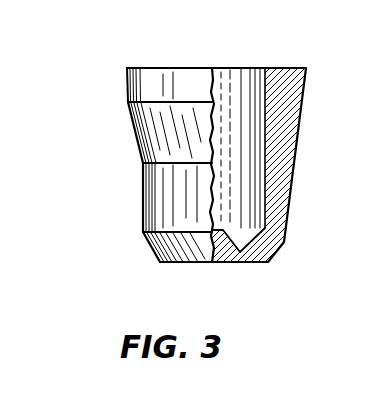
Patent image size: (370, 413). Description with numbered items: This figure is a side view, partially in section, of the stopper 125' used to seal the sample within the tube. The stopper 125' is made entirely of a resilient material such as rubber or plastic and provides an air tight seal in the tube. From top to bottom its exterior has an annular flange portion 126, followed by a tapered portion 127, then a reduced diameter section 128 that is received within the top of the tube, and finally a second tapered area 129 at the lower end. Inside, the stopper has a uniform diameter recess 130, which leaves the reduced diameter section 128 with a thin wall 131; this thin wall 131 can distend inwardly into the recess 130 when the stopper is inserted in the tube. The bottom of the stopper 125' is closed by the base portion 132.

The stopper 125' is at (283, 155).
The annular flange portion 126 is at (127, 84).
The tapered portion 127 is at (131, 129).
The reduced diameter section 128 is at (143, 189).
The second tapered area 129 is at (150, 248).
The uniform diameter recess 130 is at (266, 131).
The thin wall 131 is at (265, 194).
The base portion 132 is at (250, 262).